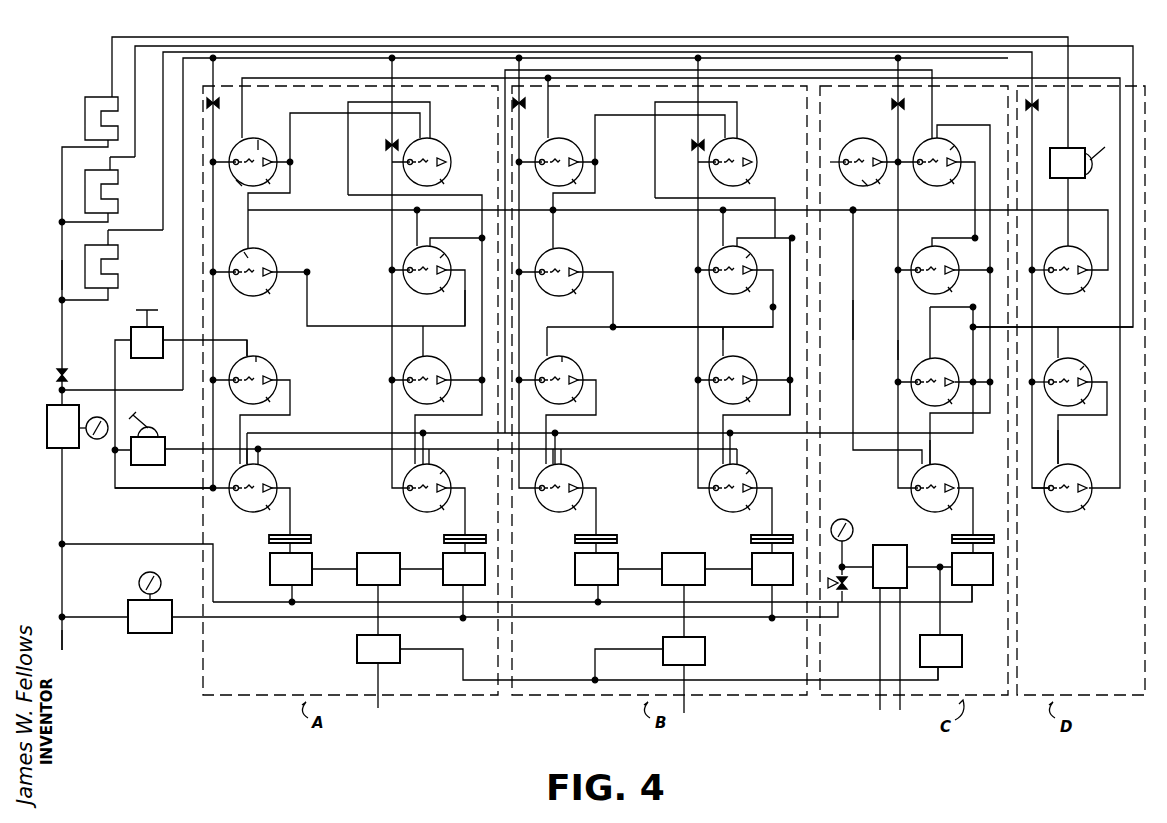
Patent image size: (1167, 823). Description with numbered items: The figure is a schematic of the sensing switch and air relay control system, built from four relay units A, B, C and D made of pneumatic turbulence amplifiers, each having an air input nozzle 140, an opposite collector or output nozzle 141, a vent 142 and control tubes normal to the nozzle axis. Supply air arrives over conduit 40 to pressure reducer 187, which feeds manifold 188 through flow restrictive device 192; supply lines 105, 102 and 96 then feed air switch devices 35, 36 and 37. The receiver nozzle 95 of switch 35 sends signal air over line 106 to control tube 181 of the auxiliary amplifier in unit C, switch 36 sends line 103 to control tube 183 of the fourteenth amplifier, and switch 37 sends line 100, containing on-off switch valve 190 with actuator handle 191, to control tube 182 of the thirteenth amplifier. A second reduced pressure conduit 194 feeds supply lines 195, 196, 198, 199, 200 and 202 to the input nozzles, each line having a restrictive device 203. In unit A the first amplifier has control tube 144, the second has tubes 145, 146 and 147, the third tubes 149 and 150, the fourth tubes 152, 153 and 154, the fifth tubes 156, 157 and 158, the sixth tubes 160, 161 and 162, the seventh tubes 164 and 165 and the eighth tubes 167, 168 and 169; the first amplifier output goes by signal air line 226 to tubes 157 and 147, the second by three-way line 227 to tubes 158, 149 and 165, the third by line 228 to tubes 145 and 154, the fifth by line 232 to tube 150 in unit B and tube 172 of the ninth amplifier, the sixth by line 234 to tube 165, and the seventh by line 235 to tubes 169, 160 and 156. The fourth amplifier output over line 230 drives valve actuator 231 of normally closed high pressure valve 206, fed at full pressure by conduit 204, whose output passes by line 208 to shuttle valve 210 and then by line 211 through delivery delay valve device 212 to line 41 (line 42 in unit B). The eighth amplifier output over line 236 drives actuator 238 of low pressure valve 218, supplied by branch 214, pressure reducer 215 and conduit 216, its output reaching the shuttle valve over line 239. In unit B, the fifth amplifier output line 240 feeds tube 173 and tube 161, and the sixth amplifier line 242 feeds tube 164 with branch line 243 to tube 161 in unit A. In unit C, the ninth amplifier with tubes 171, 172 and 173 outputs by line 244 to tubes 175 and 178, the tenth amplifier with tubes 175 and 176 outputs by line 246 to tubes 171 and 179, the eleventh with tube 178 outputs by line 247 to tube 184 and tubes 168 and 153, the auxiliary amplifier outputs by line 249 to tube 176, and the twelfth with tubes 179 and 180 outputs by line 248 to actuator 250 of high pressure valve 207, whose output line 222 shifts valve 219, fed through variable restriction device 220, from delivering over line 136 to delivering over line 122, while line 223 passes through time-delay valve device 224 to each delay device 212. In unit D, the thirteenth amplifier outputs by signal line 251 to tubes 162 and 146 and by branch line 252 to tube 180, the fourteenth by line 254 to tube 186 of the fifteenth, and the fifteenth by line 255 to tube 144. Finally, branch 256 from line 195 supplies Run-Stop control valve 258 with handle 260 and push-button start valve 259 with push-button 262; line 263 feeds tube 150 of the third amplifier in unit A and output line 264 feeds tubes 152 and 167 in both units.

The air switch device 35 is at (116, 246).
The air switch device 36 is at (94, 174).
The air switch device 37 is at (91, 90).
The supply conduit 40 is at (66, 646).
The line to valve motor 41 is at (372, 702).
The line to valve motor 42 is at (687, 711).
The receiver nozzle 95 is at (92, 103).
The supply line 96 is at (64, 142).
The signal air output line 100 is at (110, 47).
The supply line 102 is at (108, 221).
The signal air output line 103 is at (979, 40).
The supply line 105 is at (74, 306).
The signal air output line 106 is at (824, 39).
The clutch delivery line 122 is at (900, 704).
The air motor delivery line 136 is at (878, 704).
The air input nozzle 140 is at (894, 180).
The collector or air output nozzle 141 is at (266, 142).
The vent 142 is at (264, 194).
The control tube 144 is at (247, 136).
The control tube 145 is at (254, 254).
The control tube 146 is at (240, 242).
The control tube 147 is at (234, 258).
The control tube 149 is at (256, 356).
The control tube 150 is at (236, 364).
The control tube 152 is at (261, 478).
The control tube 153 is at (272, 464).
The control tube 154 is at (242, 492).
The control tube 156 is at (439, 140).
The control tube 157 is at (435, 138).
The control tube 158 is at (386, 140).
The control tube 160 is at (440, 244).
The control tube 161 is at (403, 242).
The control tube 162 is at (405, 246).
The control tube 164 is at (428, 358).
The control tube 165 is at (404, 358).
The control tube 167 is at (448, 480).
The control tube 168 is at (440, 472).
The control tube 169 is at (406, 478).
The control tube 171 is at (952, 130).
The control tube 172 is at (938, 136).
The control tube 173 is at (916, 137).
The control tube 175 is at (940, 242).
The control tube 176 is at (910, 257).
The control tube 178 is at (938, 368).
The control tube 179 is at (942, 482).
The control tube 180 is at (912, 468).
The control tube 181 is at (860, 140).
The control tube 182 is at (1076, 257).
The control tube 183 is at (1082, 357).
The control tube 184 is at (1078, 360).
The control tube 186 is at (1082, 464).
The pressure reducer 187 is at (47, 418).
The manifold 188 is at (60, 275).
The system on-off switch valve 190 is at (1084, 146).
The actuator handle 191 is at (1096, 178).
The flow restrictive device 192 is at (68, 368).
The second reduced pressure supply conduit 194 is at (175, 282).
The supply line 195 is at (214, 140).
The supply line 196 is at (384, 340).
The supply line 198 is at (790, 316).
The supply line 199 is at (694, 228).
The supply line 200 is at (896, 342).
The supply line 202 is at (1036, 310).
The restrictive device 203 is at (226, 94).
The conduit 204 is at (158, 536).
The normally closed high pressure valve 206 is at (270, 566).
The normally closed high pressure valve 207 is at (950, 577).
The line 208 is at (329, 558).
The differential pressure or shuttle valve 210 is at (366, 552).
The line 211 is at (364, 602).
The delivery delay valve device 212 is at (357, 650).
The branch 214 is at (86, 610).
The pressure reducer 215 is at (136, 636).
The conduit 216 is at (208, 624).
The normally closed low pressure valve 218 is at (618, 585).
The valve 219 is at (890, 566).
The variable restriction device 220 is at (860, 598).
The output line 222 is at (906, 548).
The line 223 is at (624, 678).
The time-delay valve device 224 is at (941, 657).
The signal air line 226 is at (288, 114).
The three-way line 227 is at (310, 230).
The line 228 is at (280, 362).
The line 230 is at (290, 516).
The valve actuator 231 is at (296, 532).
The signal air line 232 is at (920, 68).
The line 234 is at (463, 310).
The line 235 is at (322, 204).
The line 236 is at (466, 516).
The valve actuator 238 is at (458, 526).
The line 239 is at (414, 554).
The signal air line 240 is at (768, 198).
The line 242 is at (736, 332).
The branch line 243 is at (742, 308).
The signal line 244 is at (970, 195).
The line 246 is at (974, 306).
The signal line 247 is at (974, 330).
The line 248 is at (976, 484).
The line 249 is at (866, 236).
The valve actuator 250 is at (952, 536).
The signal line 251 is at (636, 212).
The branch line 252 is at (856, 326).
The line 254 is at (1068, 448).
The signal line 255 is at (1084, 80).
The branch 256 is at (132, 488).
The Run-Stop or over-riding control valve 258 is at (164, 437).
The push-button system start valve 259 is at (154, 358).
The handle 260 is at (138, 420).
The push-button 262 is at (156, 319).
The line 263 is at (244, 349).
The output line 264 is at (182, 460).